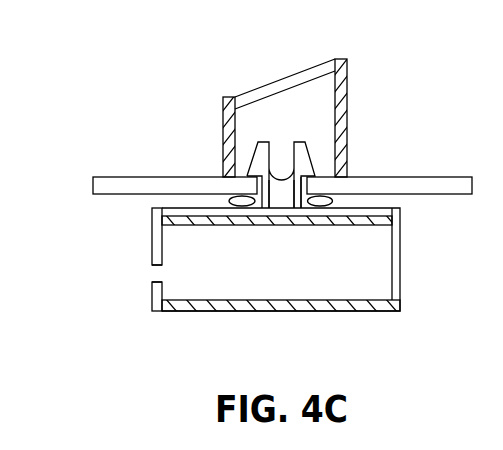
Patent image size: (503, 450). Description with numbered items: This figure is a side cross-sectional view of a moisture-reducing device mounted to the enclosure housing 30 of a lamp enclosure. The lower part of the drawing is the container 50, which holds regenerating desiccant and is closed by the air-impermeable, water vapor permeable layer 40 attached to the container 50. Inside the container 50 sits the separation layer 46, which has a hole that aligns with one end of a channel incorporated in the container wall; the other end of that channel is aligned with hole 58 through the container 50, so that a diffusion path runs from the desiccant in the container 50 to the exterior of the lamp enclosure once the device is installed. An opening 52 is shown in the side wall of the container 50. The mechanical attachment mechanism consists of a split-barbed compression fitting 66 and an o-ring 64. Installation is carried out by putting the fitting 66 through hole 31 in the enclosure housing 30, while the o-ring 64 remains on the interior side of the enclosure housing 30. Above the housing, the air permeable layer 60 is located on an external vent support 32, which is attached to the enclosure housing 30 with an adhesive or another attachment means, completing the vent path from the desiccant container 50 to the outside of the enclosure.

The enclosure housing 30 is at (150, 177).
The hole 31 is at (309, 186).
The external vent support 32 is at (351, 87).
The air-impermeable, water vapor permeable layer 40 is at (250, 311).
The separation layer 46 is at (218, 226).
The container 50 is at (402, 261).
The opening 52 is at (150, 273).
The hole 58 is at (296, 211).
The air permeable layer 60 is at (292, 77).
The o-ring 64 is at (335, 202).
The split-barbed compression fitting 66 is at (316, 157).